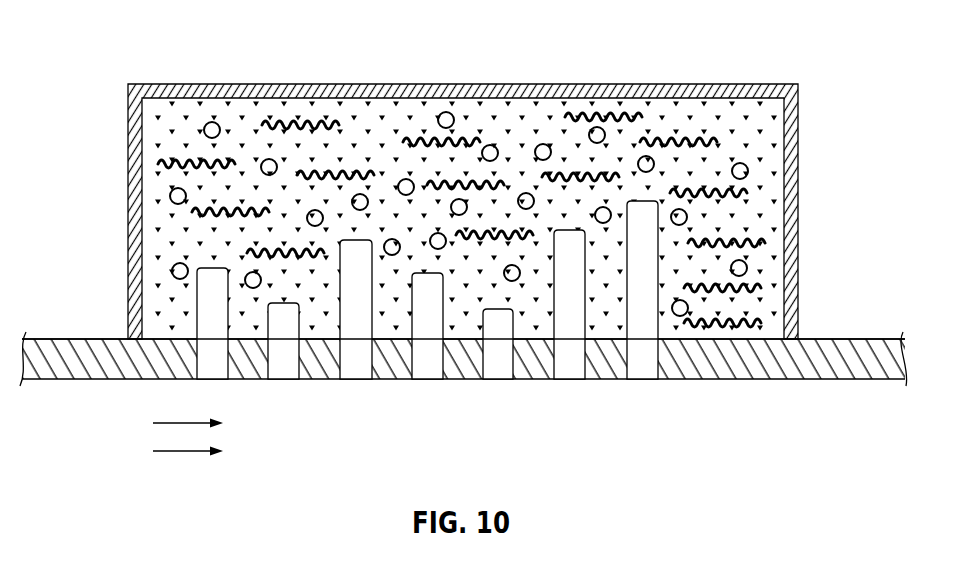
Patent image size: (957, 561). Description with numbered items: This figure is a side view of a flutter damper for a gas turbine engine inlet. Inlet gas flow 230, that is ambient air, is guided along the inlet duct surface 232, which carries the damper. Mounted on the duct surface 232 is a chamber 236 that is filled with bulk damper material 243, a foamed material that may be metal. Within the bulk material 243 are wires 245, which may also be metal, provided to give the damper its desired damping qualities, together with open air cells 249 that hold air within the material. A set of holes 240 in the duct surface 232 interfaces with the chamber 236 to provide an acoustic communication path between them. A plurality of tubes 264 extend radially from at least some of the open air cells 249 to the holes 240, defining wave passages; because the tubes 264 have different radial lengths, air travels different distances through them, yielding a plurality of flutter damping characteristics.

The inlet gas flow 230 is at (170, 453).
The inlet duct surface 232 is at (82, 368).
The chamber 236 is at (197, 42).
The holes 240 is at (463, 329).
The bulk damper material 243 is at (373, 118).
The wires 245 is at (287, 118).
The open air cells 249 is at (213, 122).
The tubes 264 is at (635, 313).